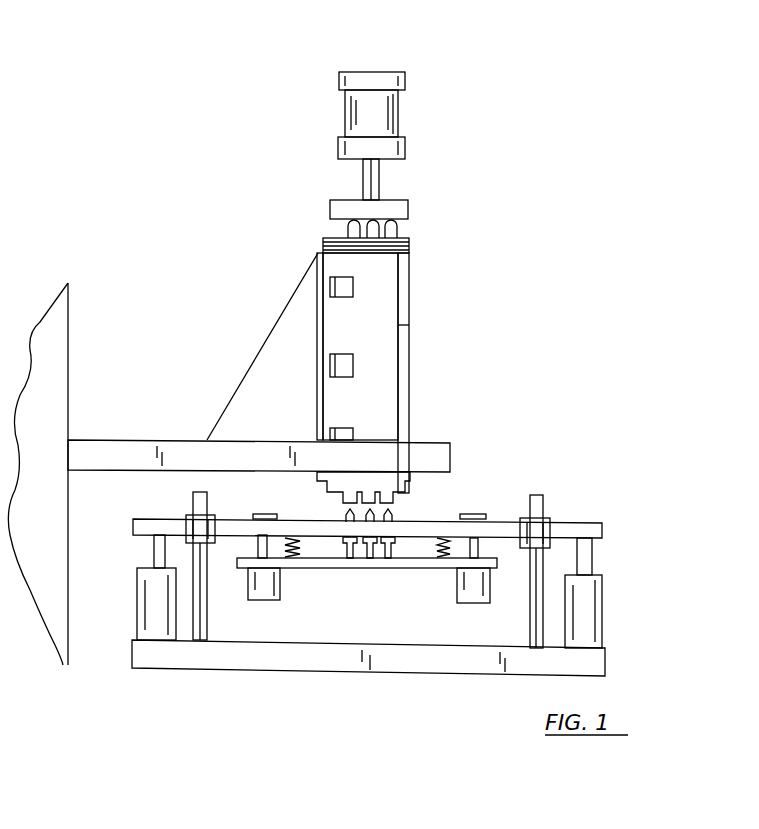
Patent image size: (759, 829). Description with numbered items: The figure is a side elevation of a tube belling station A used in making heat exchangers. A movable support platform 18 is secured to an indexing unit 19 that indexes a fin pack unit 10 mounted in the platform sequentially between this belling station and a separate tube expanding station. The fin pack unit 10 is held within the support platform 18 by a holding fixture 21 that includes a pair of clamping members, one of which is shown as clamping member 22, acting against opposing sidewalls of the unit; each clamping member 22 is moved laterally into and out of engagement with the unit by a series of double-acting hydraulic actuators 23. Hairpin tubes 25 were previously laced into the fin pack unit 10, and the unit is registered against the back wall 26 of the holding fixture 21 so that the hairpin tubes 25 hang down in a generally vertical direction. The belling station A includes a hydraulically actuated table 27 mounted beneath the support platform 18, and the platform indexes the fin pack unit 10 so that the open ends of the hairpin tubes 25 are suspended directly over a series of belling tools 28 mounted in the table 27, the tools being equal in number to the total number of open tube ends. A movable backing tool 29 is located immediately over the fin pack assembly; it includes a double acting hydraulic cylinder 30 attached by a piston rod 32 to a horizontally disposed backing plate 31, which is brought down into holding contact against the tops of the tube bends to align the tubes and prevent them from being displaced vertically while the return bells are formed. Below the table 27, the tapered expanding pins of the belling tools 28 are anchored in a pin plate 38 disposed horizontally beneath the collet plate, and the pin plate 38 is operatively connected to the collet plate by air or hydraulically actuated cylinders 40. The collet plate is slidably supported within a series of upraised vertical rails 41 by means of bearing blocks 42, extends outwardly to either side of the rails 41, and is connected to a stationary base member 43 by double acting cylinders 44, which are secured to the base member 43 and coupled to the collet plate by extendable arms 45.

The fin pack unit 10 is at (411, 339).
The movable support platform 18 is at (423, 442).
The indexing unit 19 is at (70, 385).
The holding fixture 21 is at (400, 306).
The clamping member 22 is at (388, 385).
The double-acting hydraulic actuators 23 is at (335, 365).
The hairpin tubes 25 is at (345, 233).
The back wall 26 is at (318, 362).
The hydraulically actuated table 27 is at (604, 513).
The belling tools 28 is at (344, 511).
The movable backing tool 29 is at (410, 130).
The double acting hydraulic cylinder 30 is at (398, 107).
The backing plate 31 is at (408, 210).
The piston rod 32 is at (375, 183).
The pin plate 38 is at (385, 568).
The air or hydraulically actuated cylinders 40 is at (280, 588).
The upraised vertical rails 41 is at (207, 617).
The bearing blocks 42 is at (188, 515).
The stationary base member 43 is at (323, 672).
The double acting cylinders 44 is at (137, 625).
The extendable arms 45 is at (153, 555).
The tube belling station A is at (520, 444).